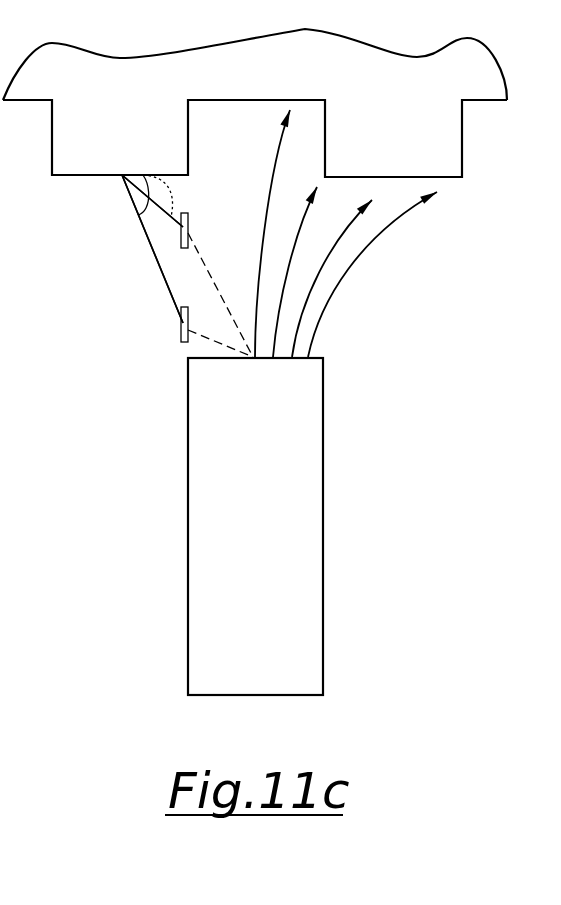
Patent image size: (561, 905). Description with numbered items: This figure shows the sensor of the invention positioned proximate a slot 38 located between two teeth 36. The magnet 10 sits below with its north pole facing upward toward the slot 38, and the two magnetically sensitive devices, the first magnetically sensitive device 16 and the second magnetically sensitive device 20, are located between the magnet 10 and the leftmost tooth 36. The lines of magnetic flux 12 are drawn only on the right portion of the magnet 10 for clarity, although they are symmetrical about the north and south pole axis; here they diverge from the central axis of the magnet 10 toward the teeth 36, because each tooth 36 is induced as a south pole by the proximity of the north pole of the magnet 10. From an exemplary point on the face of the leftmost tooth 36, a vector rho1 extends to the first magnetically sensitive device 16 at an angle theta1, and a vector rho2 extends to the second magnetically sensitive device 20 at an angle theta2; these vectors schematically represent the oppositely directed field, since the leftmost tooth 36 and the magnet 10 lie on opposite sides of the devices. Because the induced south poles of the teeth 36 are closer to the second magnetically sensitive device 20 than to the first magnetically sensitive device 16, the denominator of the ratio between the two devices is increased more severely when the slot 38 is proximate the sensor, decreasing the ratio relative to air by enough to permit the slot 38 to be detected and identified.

The magnet 10 is at (323, 478).
The lines of magnetic flux 12 is at (342, 285).
The first magnetically sensitive device 16 is at (187, 323).
The second magnetically sensitive device 20 is at (188, 223).
The tooth 36 is at (73, 176).
The slot 38 is at (250, 100).
The angle theta 1 theta1 is at (137, 225).
The angle theta 2 theta2 is at (173, 195).
The vector eta 1 rho1 is at (160, 280).
The vector eta 2 rho2 is at (181, 227).